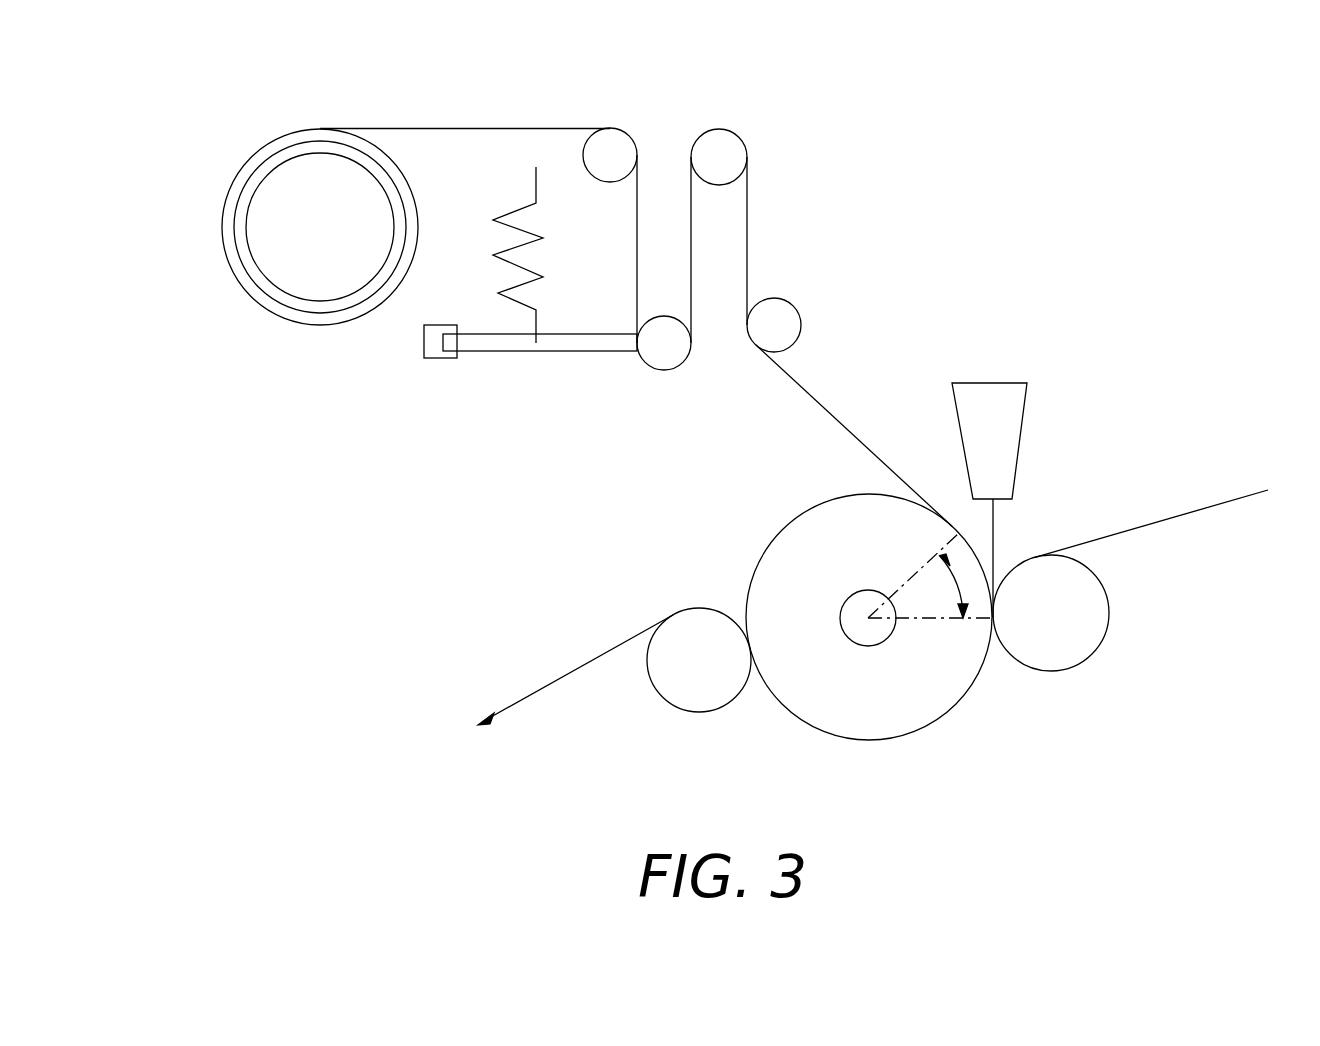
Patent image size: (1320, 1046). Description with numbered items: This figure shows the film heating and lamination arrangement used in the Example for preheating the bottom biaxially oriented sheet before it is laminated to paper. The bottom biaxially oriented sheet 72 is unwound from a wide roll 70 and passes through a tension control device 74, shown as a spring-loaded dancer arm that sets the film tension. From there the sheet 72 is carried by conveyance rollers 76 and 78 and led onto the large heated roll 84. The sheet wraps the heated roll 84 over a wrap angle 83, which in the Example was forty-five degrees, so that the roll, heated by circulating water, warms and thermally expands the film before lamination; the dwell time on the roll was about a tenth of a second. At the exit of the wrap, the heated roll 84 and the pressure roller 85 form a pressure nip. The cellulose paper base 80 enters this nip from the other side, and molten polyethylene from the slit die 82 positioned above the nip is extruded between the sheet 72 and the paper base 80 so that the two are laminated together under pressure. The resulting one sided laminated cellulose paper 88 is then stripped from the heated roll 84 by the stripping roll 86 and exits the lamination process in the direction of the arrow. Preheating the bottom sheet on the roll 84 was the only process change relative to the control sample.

The wide roll 70 is at (277, 282).
The bottom biaxially oriented sheet 72 is at (537, 128).
The tension control device 74 is at (480, 352).
The conveyance roller 76 is at (725, 128).
The conveyance roller 78 is at (783, 300).
The cellulose paper base 80 is at (1143, 526).
The slit die 82 is at (1005, 428).
The wrap angle 83 is at (955, 580).
The heated roll 84 is at (962, 660).
The pressure roller 85 is at (1105, 610).
The stripping roll 86 is at (727, 705).
The one sided laminated cellulose paper 88 is at (557, 678).